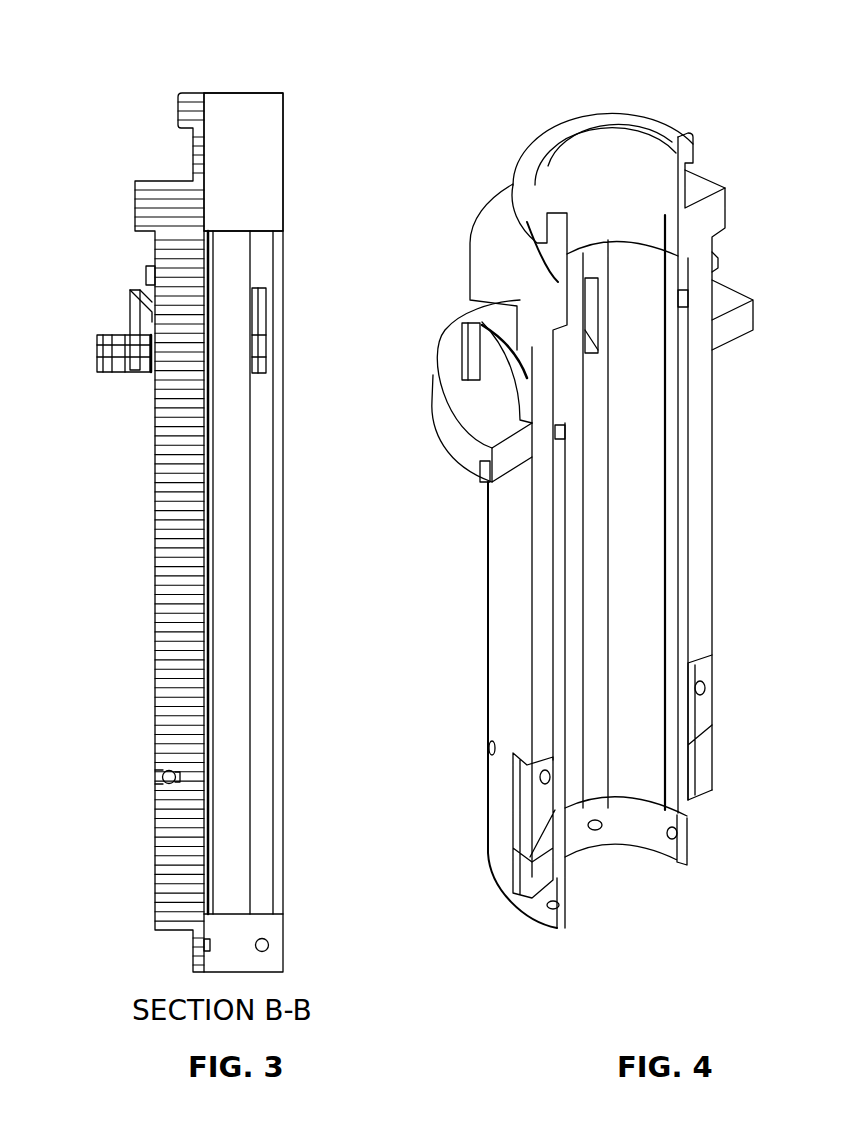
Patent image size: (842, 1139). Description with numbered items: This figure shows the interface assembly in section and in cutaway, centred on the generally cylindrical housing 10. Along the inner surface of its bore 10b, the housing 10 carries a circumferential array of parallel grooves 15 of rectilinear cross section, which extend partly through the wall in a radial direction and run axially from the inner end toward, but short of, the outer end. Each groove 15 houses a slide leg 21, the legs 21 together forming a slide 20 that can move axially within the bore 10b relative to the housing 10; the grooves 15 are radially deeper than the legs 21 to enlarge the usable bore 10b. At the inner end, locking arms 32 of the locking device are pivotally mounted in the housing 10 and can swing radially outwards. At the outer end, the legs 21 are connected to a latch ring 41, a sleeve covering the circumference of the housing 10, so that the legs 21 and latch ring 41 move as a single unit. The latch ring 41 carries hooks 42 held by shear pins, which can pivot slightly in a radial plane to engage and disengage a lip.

In FIG. 3, the housing 10 is at (153, 598).
In FIG. 3, the bore 10b is at (242, 118).
In FIG. 3, the grooves 15 is at (260, 262).
In FIG. 4, the grooves 15 is at (593, 253).
In FIG. 4, the slide 20 is at (632, 437).
In FIG. 3, the slide legs 21 is at (263, 478).
In FIG. 4, the slide legs 21 is at (673, 503).
In FIG. 4, the locking arms 32 is at (527, 806).
In FIG. 4, the latch ring 41 is at (440, 367).
In FIG. 3, the hooks 42 is at (132, 330).